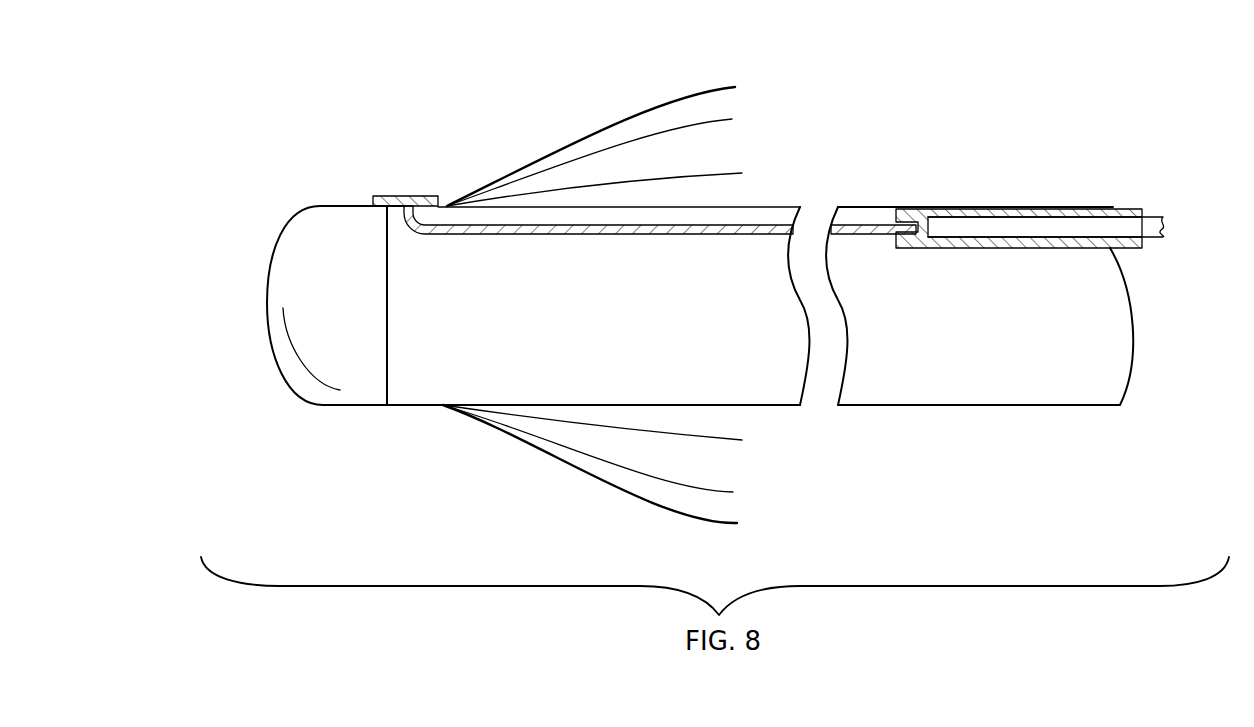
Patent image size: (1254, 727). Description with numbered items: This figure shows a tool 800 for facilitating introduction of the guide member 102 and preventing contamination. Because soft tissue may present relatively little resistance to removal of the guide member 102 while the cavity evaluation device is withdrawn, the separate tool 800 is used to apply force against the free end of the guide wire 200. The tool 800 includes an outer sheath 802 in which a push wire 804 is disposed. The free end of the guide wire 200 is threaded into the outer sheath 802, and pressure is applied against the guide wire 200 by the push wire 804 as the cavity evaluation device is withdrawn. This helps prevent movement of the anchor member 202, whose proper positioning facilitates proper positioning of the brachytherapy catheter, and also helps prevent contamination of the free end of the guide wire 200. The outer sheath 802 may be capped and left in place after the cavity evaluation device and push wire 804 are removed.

The tool 800 is at (243, 50).
The guide member 102 is at (455, 272).
The anchor member 202 is at (390, 195).
The guide wire 200 is at (765, 222).
The outer sheath 802 is at (1128, 248).
The push wire 804 is at (1077, 227).